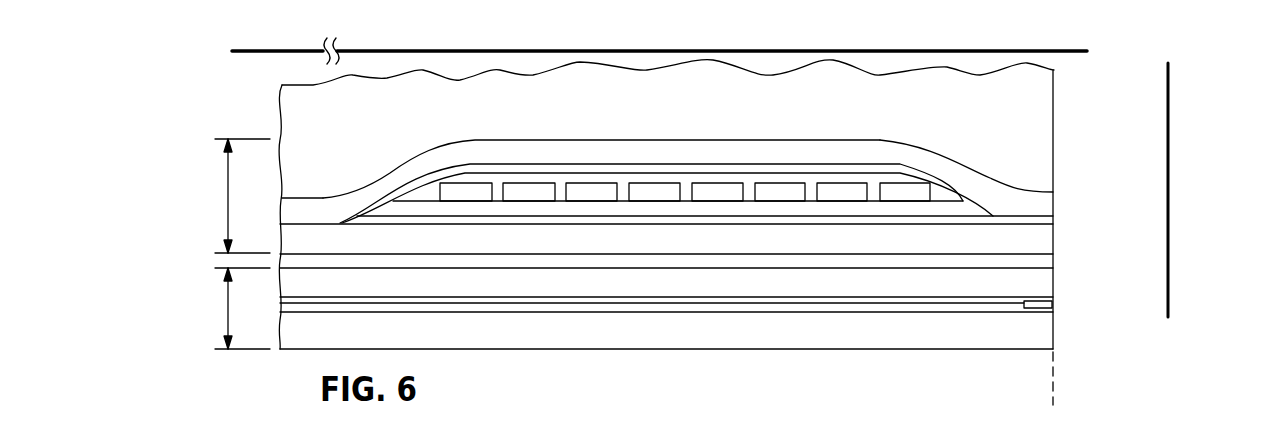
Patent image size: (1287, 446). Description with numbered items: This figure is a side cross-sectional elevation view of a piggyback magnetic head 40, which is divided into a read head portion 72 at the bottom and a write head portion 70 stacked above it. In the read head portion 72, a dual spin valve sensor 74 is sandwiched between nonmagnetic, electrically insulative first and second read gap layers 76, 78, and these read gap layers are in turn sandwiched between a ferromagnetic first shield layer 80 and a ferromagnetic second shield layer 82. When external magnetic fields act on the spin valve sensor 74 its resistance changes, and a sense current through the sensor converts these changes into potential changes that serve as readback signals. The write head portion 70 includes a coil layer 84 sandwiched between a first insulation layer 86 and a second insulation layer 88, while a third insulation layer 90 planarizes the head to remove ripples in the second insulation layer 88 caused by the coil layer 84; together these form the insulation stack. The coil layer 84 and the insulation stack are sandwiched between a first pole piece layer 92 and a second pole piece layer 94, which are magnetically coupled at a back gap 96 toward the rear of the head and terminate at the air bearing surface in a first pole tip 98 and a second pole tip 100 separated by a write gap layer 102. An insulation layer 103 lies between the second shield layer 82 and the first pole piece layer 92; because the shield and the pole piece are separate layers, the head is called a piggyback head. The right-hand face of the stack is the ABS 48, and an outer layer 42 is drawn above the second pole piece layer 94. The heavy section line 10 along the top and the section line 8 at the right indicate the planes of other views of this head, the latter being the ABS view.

The section line 10- 10 is at (238, 8).
The section line 8- 8 is at (1182, 70).
The piggyback magnetic head 40 is at (258, 94).
The overcoat layer 42 is at (1038, 97).
The back gap 96 is at (320, 220).
The third insulation layer 90 is at (504, 166).
The second pole piece layer 94 is at (845, 150).
The second insulation layer 88 is at (947, 190).
The coil layer 84 is at (715, 188).
The second pole tip 100 is at (1047, 200).
The write gap layer 102 is at (1052, 218).
The first pole tip 98 is at (1053, 242).
The first insulation layer 86 is at (627, 208).
The insulation layer 103 is at (887, 262).
The second shield layer 82 is at (930, 285).
The second read gap layer 78 is at (702, 294).
The first read gap layer 76 is at (733, 312).
The first shield layer 80 is at (828, 337).
The first pole piece layer 92 is at (978, 243).
The dual spin valve sensor 74 is at (1052, 308).
The write head portion 70 is at (227, 202).
The read head portion 72 is at (227, 313).
The air bearing surface ABS 48 is at (1055, 396).